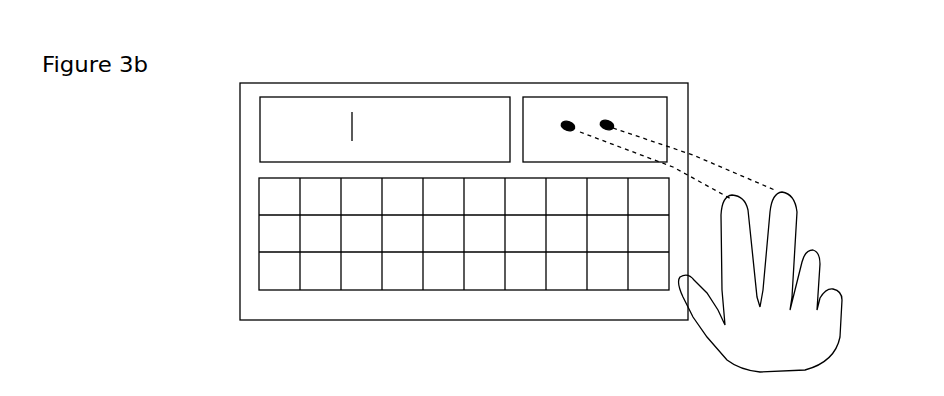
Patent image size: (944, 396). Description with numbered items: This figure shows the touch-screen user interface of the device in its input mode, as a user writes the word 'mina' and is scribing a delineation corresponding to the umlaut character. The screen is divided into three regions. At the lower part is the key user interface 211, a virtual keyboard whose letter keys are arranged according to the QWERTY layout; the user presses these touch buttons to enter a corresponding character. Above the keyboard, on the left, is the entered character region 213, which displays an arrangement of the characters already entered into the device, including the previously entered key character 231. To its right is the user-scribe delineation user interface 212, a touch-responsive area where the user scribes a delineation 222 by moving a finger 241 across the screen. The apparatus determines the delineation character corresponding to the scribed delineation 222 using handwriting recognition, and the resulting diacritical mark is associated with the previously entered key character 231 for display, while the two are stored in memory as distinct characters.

The key user interface 211 is at (268, 240).
The user-scribe delineation user interface 212 is at (647, 113).
The entered character region 213 is at (272, 155).
The scribed delineation 222 is at (609, 123).
The previously entered key character 231 is at (348, 113).
The finger 241 is at (786, 205).